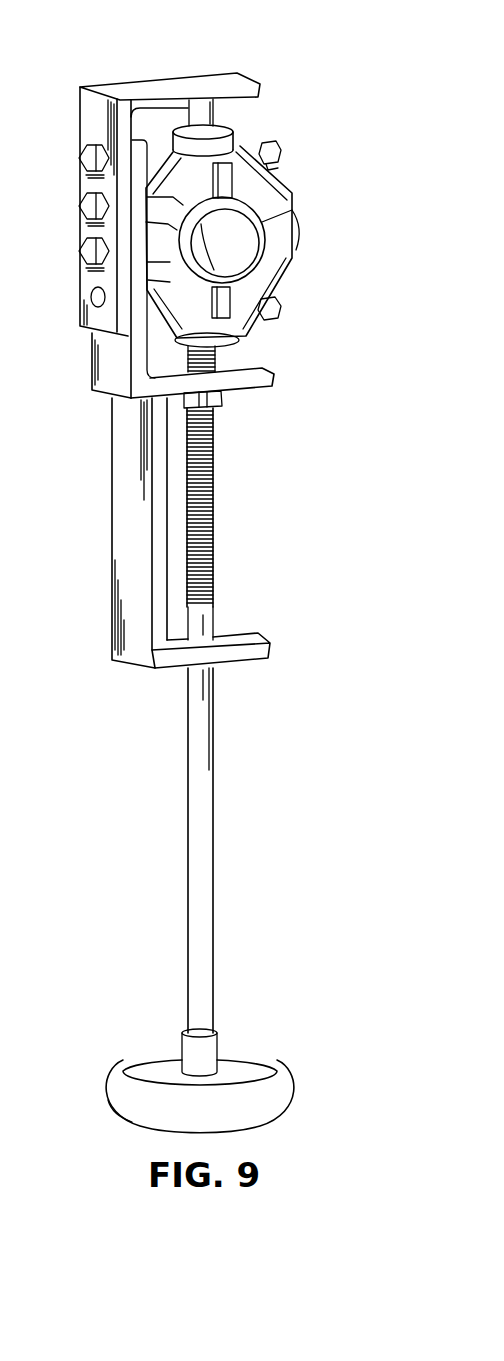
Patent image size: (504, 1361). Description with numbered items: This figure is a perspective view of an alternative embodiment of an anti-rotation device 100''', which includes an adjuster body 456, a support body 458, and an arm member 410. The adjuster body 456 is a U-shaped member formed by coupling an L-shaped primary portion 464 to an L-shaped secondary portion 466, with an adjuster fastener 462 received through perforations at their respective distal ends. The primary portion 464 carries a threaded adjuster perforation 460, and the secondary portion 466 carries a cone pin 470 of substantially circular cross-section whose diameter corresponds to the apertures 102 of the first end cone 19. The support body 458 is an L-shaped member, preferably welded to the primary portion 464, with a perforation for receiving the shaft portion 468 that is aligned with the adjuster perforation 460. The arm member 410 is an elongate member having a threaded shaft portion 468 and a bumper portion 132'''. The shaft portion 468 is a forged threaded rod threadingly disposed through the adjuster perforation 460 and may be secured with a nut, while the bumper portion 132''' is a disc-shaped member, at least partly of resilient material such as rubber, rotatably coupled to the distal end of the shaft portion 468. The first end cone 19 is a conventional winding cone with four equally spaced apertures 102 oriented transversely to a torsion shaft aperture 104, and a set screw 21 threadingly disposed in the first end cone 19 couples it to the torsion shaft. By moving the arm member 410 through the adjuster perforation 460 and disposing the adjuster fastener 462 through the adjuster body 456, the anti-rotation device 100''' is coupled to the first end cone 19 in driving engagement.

The anti-rotation device 100''' is at (187, 571).
The cone pin 470 is at (203, 110).
The secondary portion 466 is at (262, 86).
The apertures 102 is at (223, 135).
The set screw 21 is at (282, 150).
The adjuster fastener 462 is at (88, 157).
The torsion shaft aperture 104 is at (243, 233).
The first end cone 19 is at (270, 272).
The adjuster body 456 is at (66, 317).
The primary portion 464 is at (272, 376).
The adjuster perforation 460 is at (220, 366).
The support body 458 is at (128, 538).
The shaft portion 468 is at (213, 503).
The arm member 410 is at (228, 872).
The bumper portion 132''' is at (238, 1081).